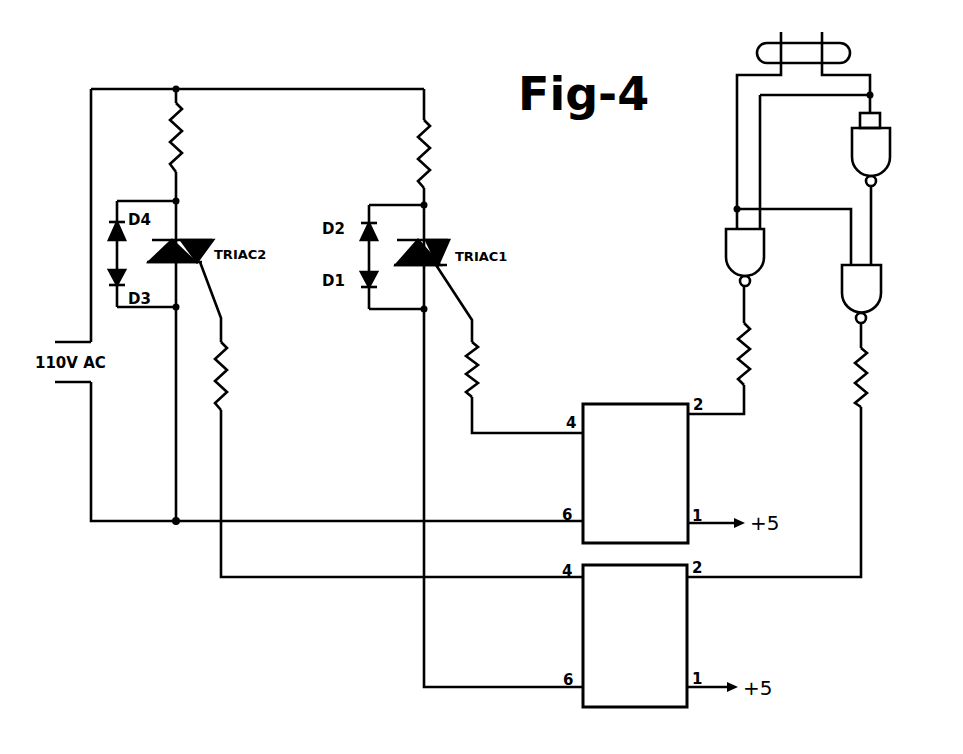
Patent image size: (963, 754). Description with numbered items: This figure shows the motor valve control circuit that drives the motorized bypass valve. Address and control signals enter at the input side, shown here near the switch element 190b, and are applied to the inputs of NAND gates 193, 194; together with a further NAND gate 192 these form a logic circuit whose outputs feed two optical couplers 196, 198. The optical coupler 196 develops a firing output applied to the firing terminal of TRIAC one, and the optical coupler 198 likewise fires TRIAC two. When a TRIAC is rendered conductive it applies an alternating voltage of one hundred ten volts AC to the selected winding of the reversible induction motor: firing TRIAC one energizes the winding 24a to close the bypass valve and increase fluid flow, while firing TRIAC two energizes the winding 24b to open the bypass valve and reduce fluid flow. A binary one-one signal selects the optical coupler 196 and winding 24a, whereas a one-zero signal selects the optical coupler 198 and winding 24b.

The motor winding 24a is at (432, 156).
The motor winding 24b is at (181, 150).
The switch 190b is at (757, 52).
The NAND gate 192 is at (882, 278).
The NAND gate 193 is at (892, 132).
The NAND gate 194 is at (726, 250).
The optical coupler 196 is at (688, 462).
The optical coupler 198 is at (688, 618).